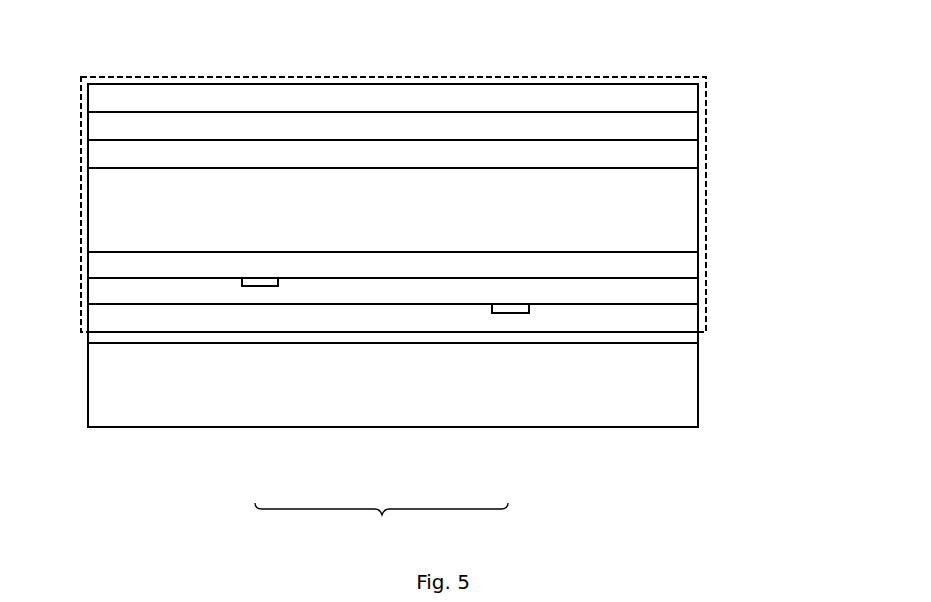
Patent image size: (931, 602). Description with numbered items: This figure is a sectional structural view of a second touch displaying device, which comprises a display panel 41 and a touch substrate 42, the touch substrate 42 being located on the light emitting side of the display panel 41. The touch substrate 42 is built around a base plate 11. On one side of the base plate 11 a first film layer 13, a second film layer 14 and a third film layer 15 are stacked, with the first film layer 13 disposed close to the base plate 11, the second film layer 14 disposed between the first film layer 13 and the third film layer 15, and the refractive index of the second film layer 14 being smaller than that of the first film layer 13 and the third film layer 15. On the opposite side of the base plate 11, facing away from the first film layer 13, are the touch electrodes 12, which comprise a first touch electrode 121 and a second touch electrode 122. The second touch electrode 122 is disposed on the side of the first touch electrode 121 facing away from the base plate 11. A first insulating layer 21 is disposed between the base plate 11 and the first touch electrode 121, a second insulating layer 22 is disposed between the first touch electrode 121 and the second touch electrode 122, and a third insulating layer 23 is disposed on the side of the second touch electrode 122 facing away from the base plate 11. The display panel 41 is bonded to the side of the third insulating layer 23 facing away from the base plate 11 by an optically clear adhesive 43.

The touch substrate 42 is at (609, 77).
The third film layer 15 is at (642, 98).
The second film layer 14 is at (642, 123).
The first film layer 13 is at (648, 151).
The base plate 11 is at (650, 206).
The first insulating layer 21 is at (642, 263).
The second insulating layer 22 is at (642, 288).
The third insulating layer 23 is at (648, 315).
The optically clear adhesive 43 is at (651, 337).
The display panel 41 is at (650, 391).
The first touch electrode 121 is at (262, 286).
The second touch electrode 122 is at (510, 313).
The touch electrodes 12 is at (381, 529).